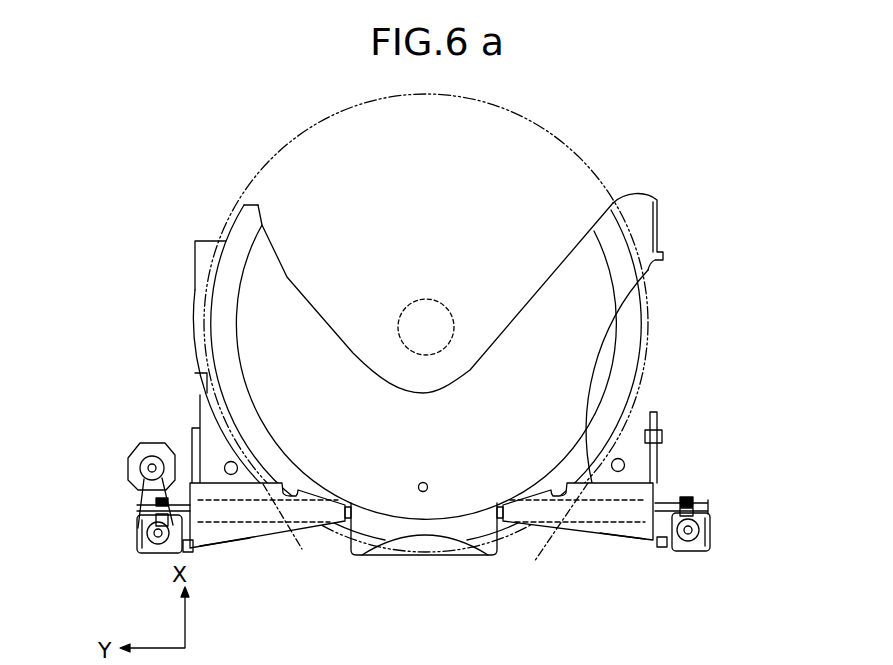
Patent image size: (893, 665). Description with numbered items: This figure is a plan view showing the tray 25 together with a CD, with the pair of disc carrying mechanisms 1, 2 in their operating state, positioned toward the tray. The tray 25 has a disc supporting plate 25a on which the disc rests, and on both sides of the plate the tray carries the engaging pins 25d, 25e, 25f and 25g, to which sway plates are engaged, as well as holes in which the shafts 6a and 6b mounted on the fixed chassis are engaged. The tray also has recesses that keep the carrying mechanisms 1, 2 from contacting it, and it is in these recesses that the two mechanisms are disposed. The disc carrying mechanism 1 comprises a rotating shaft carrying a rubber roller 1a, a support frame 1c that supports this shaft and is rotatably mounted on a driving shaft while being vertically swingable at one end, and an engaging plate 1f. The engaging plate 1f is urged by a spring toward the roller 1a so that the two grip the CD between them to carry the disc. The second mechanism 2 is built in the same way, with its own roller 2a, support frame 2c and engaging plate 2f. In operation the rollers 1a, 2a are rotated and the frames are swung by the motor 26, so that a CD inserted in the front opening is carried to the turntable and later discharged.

The element CD is at (578, 158).
The tray 25 is at (655, 323).
The disc supporting plate 25a is at (310, 308).
The engaging pin 25d is at (190, 430).
The engaging pin 25e is at (195, 246).
The engaging pin 25f is at (662, 436).
The engaging pin 25g is at (663, 256).
The shaft 6a is at (226, 463).
The shaft 6b is at (626, 465).
The motor 26 is at (128, 466).
The disc carrying mechanism 1 is at (255, 543).
The roller 1a is at (291, 530).
The support frame 1c is at (140, 542).
The engaging plate 1f is at (220, 543).
The disc carrying mechanism 2 is at (599, 545).
The roller 2a is at (554, 538).
The support frame 2c is at (702, 548).
The engaging plate 2f is at (632, 541).